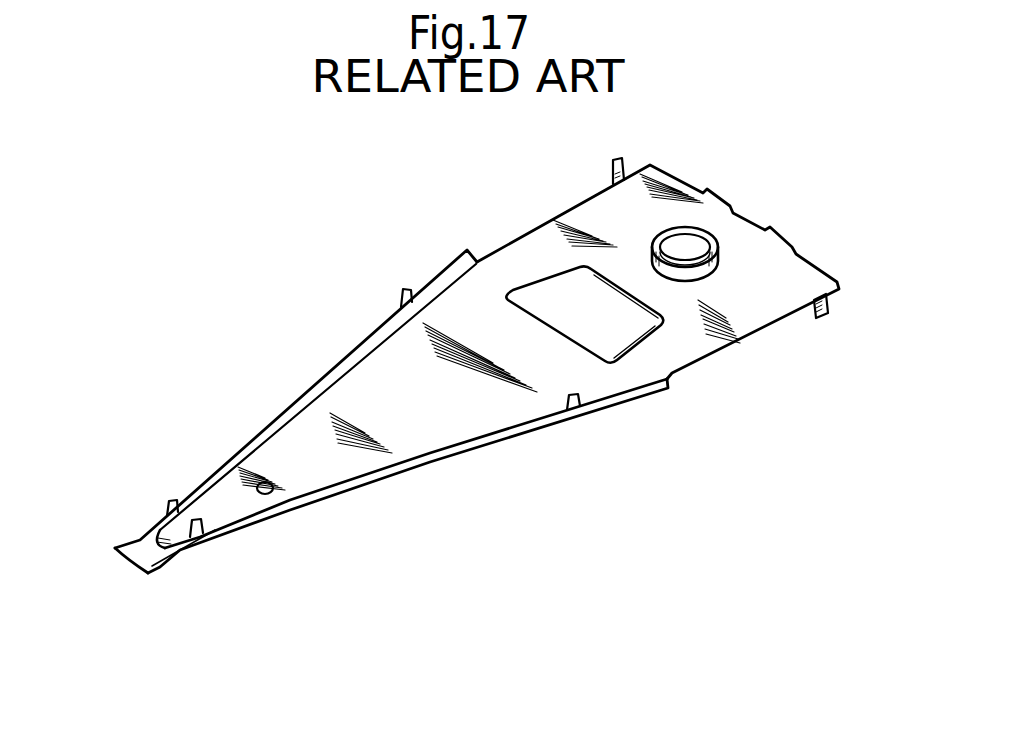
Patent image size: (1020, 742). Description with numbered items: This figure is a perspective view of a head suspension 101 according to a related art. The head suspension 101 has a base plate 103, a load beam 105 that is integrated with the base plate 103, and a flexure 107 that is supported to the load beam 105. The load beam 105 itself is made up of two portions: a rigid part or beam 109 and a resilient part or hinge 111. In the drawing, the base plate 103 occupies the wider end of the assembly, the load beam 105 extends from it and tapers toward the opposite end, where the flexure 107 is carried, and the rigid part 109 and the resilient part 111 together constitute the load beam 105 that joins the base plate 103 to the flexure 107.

The head suspension 101 is at (402, 217).
The base plate 103 is at (646, 229).
The load beam 105 is at (377, 387).
The flexure 107 is at (213, 548).
The rigid part 109 is at (423, 428).
The resilient part 111 is at (670, 362).